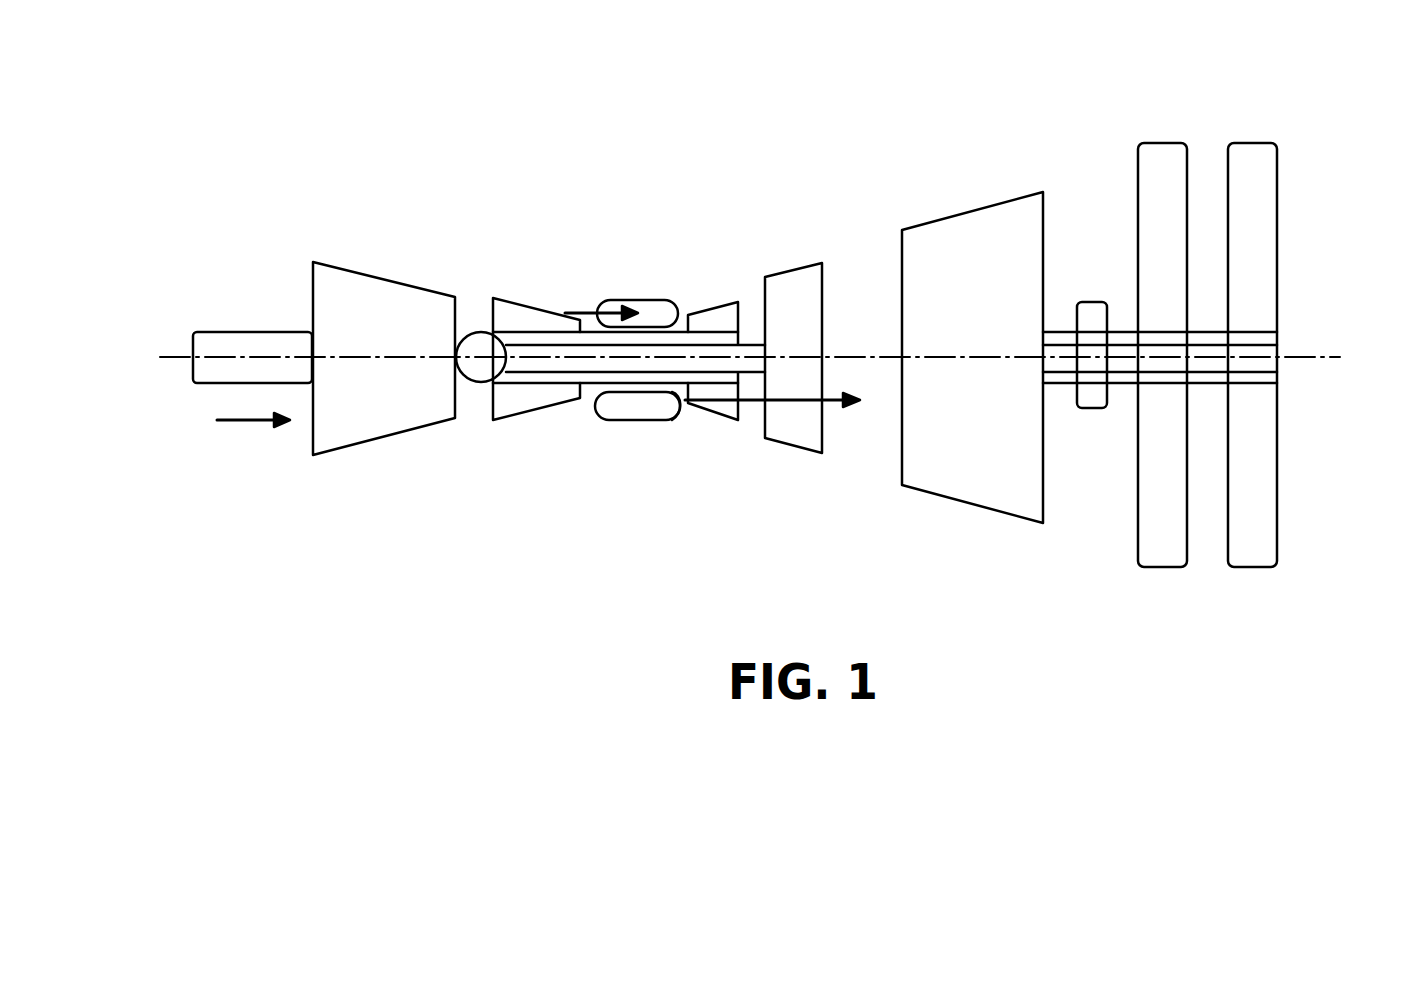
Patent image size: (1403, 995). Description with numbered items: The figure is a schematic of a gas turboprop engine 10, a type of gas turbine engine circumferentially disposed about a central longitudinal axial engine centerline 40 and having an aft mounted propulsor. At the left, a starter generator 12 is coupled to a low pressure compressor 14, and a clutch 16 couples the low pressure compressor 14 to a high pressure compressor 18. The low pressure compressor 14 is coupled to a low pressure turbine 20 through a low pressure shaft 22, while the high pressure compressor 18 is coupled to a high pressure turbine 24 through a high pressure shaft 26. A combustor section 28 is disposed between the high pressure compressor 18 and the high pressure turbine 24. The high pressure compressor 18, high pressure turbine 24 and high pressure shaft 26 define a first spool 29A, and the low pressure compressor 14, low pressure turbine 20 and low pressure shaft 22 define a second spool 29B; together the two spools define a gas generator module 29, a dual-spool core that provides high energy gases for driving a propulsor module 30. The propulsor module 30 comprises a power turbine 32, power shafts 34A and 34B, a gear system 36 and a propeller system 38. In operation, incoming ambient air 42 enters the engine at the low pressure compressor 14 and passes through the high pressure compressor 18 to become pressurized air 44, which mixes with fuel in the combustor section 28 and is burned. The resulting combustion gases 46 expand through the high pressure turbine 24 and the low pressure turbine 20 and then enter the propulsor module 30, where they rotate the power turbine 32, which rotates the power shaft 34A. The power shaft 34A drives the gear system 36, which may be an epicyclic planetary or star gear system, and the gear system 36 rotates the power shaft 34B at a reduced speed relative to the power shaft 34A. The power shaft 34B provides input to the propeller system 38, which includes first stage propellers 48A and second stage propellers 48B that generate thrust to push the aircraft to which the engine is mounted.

The gas turboprop engine 10 is at (777, 137).
The starter generator 12 is at (228, 342).
The low pressure compressor 14 is at (360, 292).
The clutch 16 is at (478, 327).
The high pressure compressor 18 is at (528, 318).
The low pressure turbine 20 is at (788, 277).
The low pressure shaft 22 is at (670, 392).
The high pressure turbine 24 is at (713, 315).
The high pressure shaft 26 is at (630, 372).
The combustor section 28 is at (640, 305).
The gas generator module 29 is at (307, 522).
The first spool 29A is at (541, 417).
The second spool 29B is at (401, 438).
The propulsor module 30 is at (892, 125).
The power turbine 32 is at (946, 480).
The power shaft 34A is at (1052, 384).
The power shaft 34B is at (1118, 362).
The gear system 36 is at (1090, 308).
The propeller system 38 is at (1259, 582).
The axial engine centerline 40 is at (1292, 358).
The incoming ambient air 42 is at (250, 422).
The pressurized air 44 is at (577, 311).
The combustion gases 46 is at (831, 403).
The first stage propellers 48A is at (1163, 556).
The second stage propellers 48B is at (1245, 472).